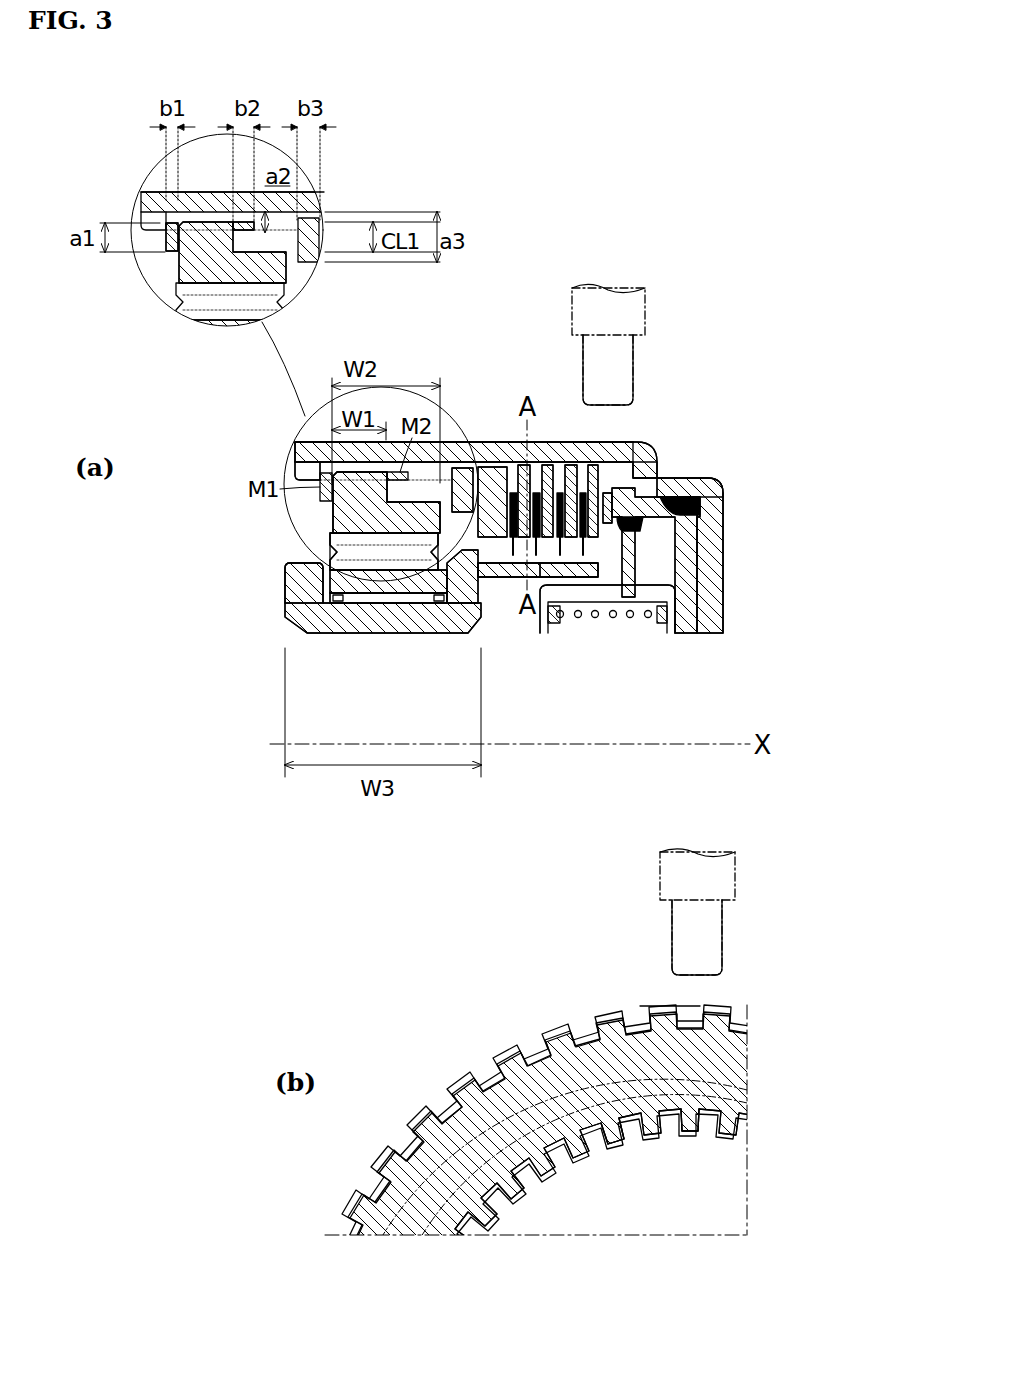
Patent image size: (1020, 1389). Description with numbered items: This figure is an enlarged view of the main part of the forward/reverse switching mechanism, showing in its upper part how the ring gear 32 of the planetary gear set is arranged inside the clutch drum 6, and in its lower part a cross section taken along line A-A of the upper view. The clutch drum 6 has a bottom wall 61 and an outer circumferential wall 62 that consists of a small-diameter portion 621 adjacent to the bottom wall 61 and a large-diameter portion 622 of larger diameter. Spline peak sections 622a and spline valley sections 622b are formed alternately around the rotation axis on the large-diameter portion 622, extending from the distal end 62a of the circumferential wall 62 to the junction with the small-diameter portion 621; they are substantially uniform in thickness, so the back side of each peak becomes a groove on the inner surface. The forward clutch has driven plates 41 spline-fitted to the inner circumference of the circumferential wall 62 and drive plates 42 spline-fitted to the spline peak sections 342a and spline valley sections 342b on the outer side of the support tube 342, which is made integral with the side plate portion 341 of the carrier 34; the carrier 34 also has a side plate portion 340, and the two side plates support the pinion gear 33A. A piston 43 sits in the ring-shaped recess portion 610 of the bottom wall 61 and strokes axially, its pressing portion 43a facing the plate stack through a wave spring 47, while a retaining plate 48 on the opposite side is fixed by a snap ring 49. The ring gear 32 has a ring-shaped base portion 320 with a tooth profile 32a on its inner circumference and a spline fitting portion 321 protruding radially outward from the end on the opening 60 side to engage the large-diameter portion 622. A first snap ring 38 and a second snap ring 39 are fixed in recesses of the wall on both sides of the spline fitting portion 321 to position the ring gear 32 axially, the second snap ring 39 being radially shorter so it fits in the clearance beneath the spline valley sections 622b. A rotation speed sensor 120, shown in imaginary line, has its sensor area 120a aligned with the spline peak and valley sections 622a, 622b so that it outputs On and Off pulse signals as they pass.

The clutch drum 6 is at (730, 485).
The ring gear 32 is at (220, 554).
The tooth profile 32a is at (345, 590).
The pinion gear 33A is at (405, 598).
The carrier 34 is at (290, 575).
The first snap ring 38 is at (212, 236).
The second snap ring 39 is at (243, 232).
The driven plates 41 is at (525, 480).
The drive plates 42 is at (548, 480).
The piston 43 is at (690, 558).
The pressing portion 43a is at (640, 614).
The wave spring 47 is at (608, 495).
The retaining plate 48 is at (495, 480).
The snap ring 49 is at (462, 475).
The opening 60 is at (172, 253).
The bottom wall 61 is at (715, 528).
The circumferential wall 62 is at (735, 372).
The distal end 62a is at (141, 201).
The rotation speed sensor 120 is at (620, 290).
The sensor area 120a is at (618, 395).
The base portion 320 is at (345, 546).
The spline fitting portion 321 is at (340, 484).
The side plate portion 340 is at (300, 620).
The side plate portion 341 is at (462, 620).
The support tube 342 is at (630, 692).
The spline peak sections 342a is at (510, 578).
The spline valley sections 342b is at (575, 578).
The ring-shaped recess portion 610 is at (723, 487).
The small-diameter portion 621 is at (650, 470).
The large-diameter portion 622 is at (620, 452).
The spline peak sections 622a is at (300, 450).
The spline valley sections 622b is at (300, 473).